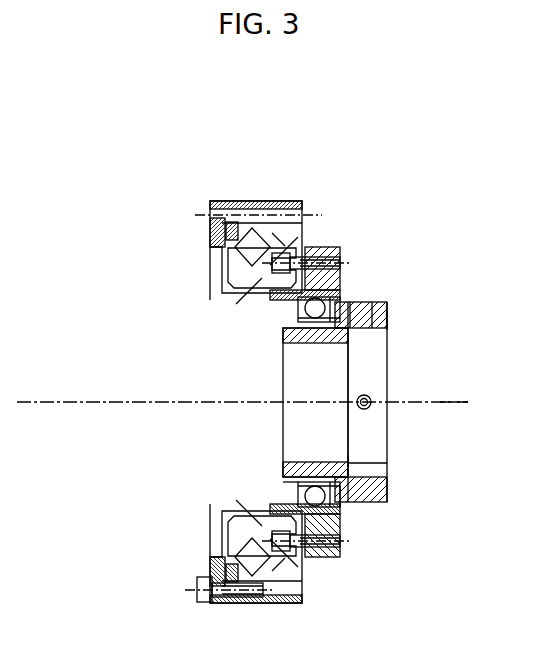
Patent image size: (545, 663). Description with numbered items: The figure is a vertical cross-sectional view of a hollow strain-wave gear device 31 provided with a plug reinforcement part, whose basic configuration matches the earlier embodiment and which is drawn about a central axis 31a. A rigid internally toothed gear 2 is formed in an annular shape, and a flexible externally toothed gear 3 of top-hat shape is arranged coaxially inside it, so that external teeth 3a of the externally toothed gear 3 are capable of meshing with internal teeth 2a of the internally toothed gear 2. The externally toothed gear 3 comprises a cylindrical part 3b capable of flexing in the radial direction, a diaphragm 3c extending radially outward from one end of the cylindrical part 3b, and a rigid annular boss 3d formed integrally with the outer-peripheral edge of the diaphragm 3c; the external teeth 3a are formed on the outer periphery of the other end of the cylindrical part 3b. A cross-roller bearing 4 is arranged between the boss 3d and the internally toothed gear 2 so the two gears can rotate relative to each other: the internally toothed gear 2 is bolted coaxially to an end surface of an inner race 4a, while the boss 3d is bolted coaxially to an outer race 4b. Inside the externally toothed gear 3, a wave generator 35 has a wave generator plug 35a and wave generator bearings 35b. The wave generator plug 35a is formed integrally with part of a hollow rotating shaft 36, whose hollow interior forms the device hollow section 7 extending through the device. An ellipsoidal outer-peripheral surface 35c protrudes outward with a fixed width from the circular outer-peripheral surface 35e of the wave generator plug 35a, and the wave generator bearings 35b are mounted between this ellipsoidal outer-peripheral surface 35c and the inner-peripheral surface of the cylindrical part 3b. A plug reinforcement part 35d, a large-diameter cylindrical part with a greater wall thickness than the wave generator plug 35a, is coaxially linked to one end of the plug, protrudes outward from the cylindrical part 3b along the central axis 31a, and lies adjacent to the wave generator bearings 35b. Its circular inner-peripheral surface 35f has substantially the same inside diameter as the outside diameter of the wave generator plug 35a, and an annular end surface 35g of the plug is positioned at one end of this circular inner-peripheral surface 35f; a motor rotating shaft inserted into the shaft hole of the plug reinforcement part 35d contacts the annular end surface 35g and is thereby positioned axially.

The internally toothed gear 2 is at (350, 272).
The internal teeth 2a is at (388, 302).
The externally toothed gear 3 is at (256, 252).
The external teeth 3a is at (304, 280).
The cylindrical part 3b is at (247, 293).
The diaphragm 3c is at (226, 264).
The boss 3d is at (214, 234).
The cross-roller bearing 4 is at (246, 213).
The inner race 4a is at (272, 240).
The outer race 4b is at (248, 232).
The device hollow section 7 is at (326, 394).
The hollow strain-wave gear device 31 is at (406, 231).
The central axis 31a is at (453, 397).
The wave generator 35 is at (337, 419).
The wave generator plug 35a is at (318, 470).
The wave generator bearings 35b is at (286, 501).
The ellipsoidal outer-peripheral surface 35c is at (340, 504).
The plug reinforcement part 35d is at (386, 476).
The circular outer-peripheral surface 35e is at (293, 482).
The circular inner-peripheral surface 35f is at (375, 476).
The annular end surface 35g is at (352, 466).
The hollow rotating shaft 36 is at (256, 402).